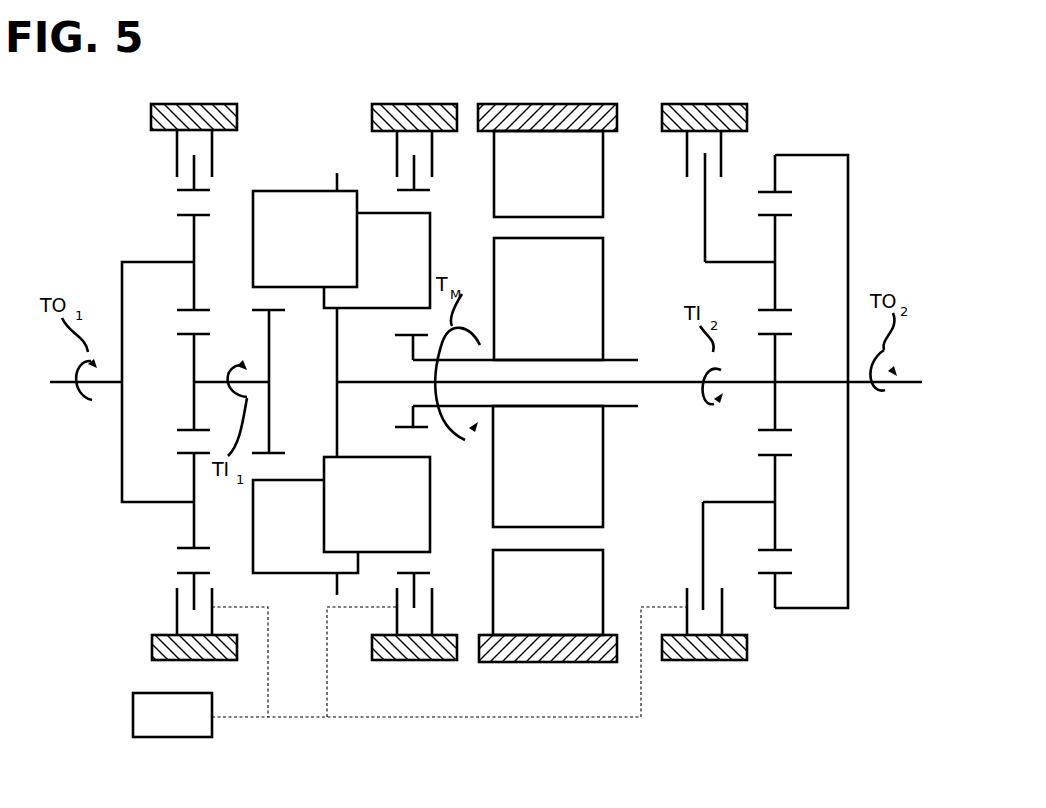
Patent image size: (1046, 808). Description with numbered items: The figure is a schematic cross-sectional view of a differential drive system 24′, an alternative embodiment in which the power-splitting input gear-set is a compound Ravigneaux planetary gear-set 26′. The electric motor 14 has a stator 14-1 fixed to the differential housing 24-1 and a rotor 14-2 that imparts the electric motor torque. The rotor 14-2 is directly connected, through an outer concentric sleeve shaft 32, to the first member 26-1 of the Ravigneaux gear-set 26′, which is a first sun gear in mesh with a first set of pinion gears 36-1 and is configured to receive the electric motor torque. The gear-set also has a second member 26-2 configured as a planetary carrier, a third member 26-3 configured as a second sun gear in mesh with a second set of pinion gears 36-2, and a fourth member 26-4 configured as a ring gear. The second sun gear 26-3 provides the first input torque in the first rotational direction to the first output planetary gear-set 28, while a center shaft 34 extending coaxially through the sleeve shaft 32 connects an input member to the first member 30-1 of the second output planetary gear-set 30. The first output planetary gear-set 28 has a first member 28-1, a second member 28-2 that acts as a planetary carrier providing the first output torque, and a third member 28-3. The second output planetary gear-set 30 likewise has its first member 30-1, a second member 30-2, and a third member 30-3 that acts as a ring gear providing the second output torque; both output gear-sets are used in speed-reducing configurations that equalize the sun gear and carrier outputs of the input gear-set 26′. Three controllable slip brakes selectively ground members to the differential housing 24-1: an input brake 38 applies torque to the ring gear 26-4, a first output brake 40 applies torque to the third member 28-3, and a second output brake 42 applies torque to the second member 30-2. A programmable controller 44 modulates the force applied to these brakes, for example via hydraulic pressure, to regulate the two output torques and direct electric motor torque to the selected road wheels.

The electric motor 14 is at (575, 356).
The stator 14-1 is at (569, 185).
The rotor 14-2 is at (569, 307).
The differential drive system 24′ is at (703, 726).
The differential housing 24-1 is at (510, 104).
The Ravigneaux planetary gear-set 26′ is at (464, 380).
The first sun gear 26-1 is at (420, 430).
The planetary carrier 26-2 is at (336, 318).
The second sun gear 26-3 is at (270, 436).
The ring gear 26-4 is at (420, 192).
The first output planetary gear-set 28 is at (134, 412).
The first member of first output planetary gear-set 28-1 is at (201, 333).
The second member of first output planetary gear-set 28-2 is at (122, 452).
The third member of first output planetary gear-set 28-3 is at (204, 192).
The second output planetary gear-set 30 is at (773, 371).
The first member of second output planetary gear-set 30-1 is at (785, 333).
The second member of second output planetary gear-set 30-2 is at (718, 263).
The third member of second output planetary gear-set 30-3 is at (848, 190).
The sleeve shaft 32 is at (622, 360).
The center shaft 34 is at (670, 383).
The first set of pinion gears 36-1 is at (407, 282).
The second set of pinion gears 36-2 is at (310, 251).
The input brake 38 is at (432, 150).
The first output brake 40 is at (213, 168).
The second output brake 42 is at (722, 155).
The programmable controller 44 is at (183, 725).